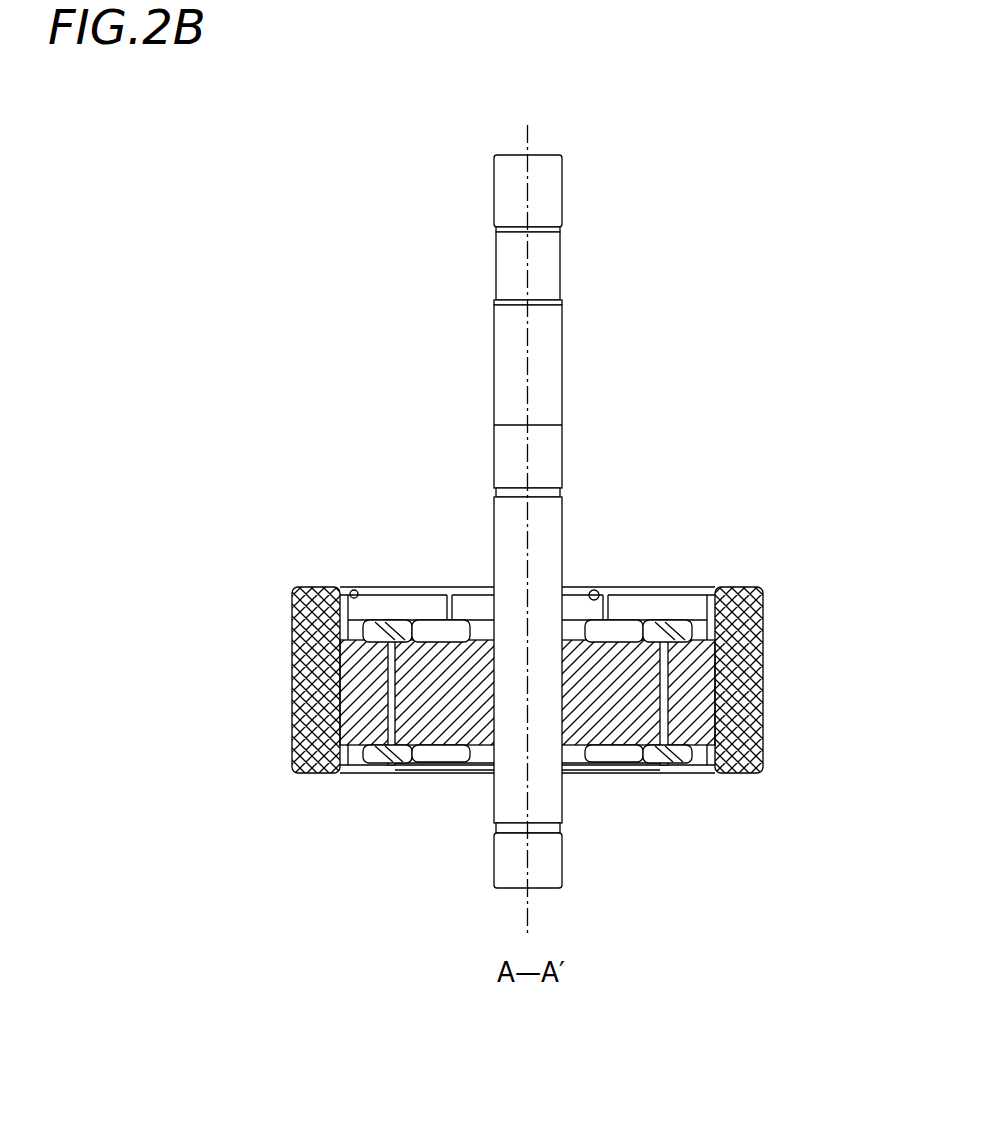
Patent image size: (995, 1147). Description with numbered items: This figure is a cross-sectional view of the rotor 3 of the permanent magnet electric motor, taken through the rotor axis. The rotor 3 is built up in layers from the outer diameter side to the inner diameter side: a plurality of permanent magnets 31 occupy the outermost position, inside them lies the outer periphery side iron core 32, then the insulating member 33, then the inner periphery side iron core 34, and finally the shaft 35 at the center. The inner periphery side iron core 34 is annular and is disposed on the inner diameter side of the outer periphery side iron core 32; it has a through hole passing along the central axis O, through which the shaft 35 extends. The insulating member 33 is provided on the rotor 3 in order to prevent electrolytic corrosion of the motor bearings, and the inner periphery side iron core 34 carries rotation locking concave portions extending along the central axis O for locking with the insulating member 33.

The rotor 3 is at (434, 437).
The permanent magnets 31 is at (290, 677).
The outer periphery side iron core 32 is at (300, 637).
The insulating member 33 is at (390, 636).
The inner periphery side iron core 34 is at (447, 658).
The shaft 35 is at (508, 340).
The central axis O is at (525, 193).